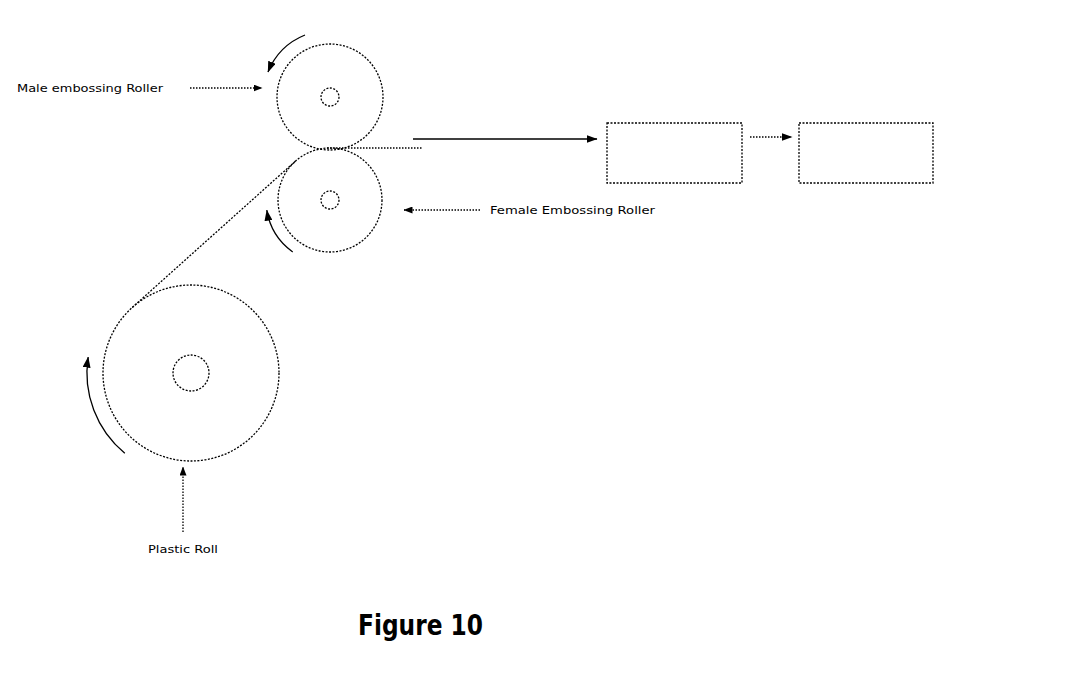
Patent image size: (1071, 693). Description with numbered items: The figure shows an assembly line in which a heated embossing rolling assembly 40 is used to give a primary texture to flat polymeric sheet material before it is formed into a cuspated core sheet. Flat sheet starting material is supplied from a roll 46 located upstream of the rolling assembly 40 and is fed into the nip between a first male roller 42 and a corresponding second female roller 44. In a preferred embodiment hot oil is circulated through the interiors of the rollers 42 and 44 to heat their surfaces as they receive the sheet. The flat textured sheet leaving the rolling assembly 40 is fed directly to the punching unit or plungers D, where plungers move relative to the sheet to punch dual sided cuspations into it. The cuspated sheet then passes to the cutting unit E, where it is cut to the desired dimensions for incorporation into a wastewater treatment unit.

The heated embossing rolling assembly 40 is at (264, 122).
The first (male) roller 42 is at (363, 87).
The second (female) roller 44 is at (343, 226).
The roll 46 is at (252, 378).
The cuspation forming unit D is at (660, 132).
The cutting unit E is at (830, 132).